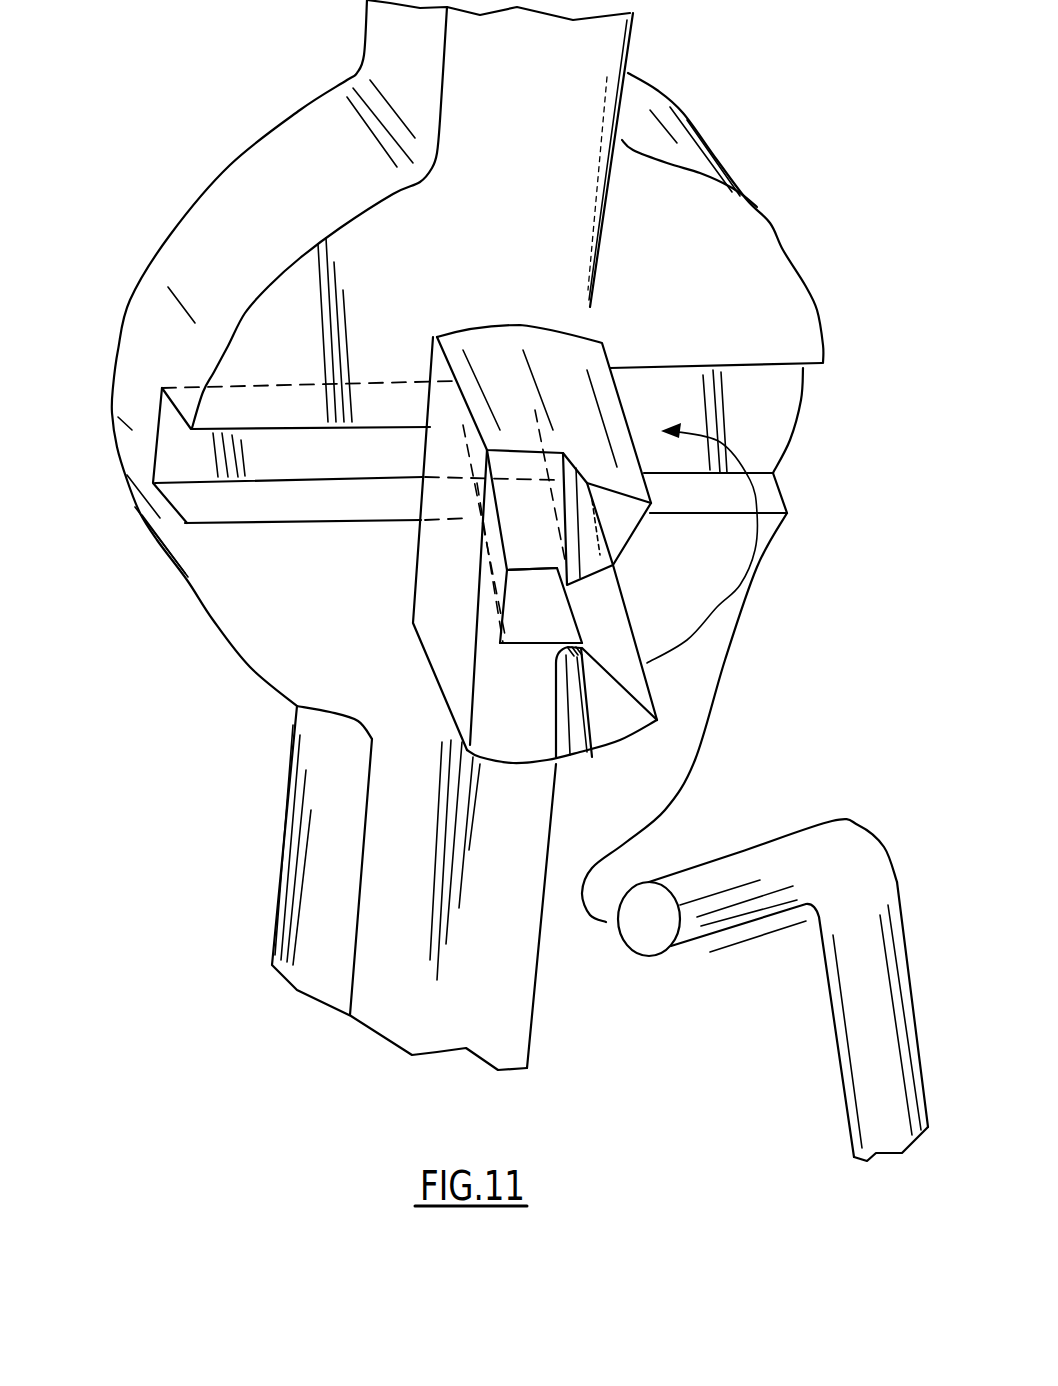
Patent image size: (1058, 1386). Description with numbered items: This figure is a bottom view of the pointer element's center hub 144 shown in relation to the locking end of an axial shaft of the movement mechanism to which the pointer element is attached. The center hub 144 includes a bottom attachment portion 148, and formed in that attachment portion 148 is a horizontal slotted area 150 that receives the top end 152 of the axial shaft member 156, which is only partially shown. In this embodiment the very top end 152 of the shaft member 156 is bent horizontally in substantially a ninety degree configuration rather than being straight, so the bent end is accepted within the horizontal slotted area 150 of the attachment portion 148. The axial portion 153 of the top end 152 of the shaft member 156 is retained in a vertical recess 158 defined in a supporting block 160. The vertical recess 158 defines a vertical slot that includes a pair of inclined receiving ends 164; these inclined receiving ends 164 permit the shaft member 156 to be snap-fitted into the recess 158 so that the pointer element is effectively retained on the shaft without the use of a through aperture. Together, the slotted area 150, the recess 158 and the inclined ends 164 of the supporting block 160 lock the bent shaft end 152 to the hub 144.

The center hub 144 is at (703, 131).
The bottom attachment portion 148 is at (455, 628).
The horizontal slotted area 150 is at (172, 459).
The top end 152 is at (773, 959).
The axial portion 153 is at (858, 1036).
The axial shaft member 156 is at (863, 1125).
The vertical recess 158 is at (560, 615).
The supporting block 160 is at (462, 697).
The inclined receiving ends 164 is at (620, 527).